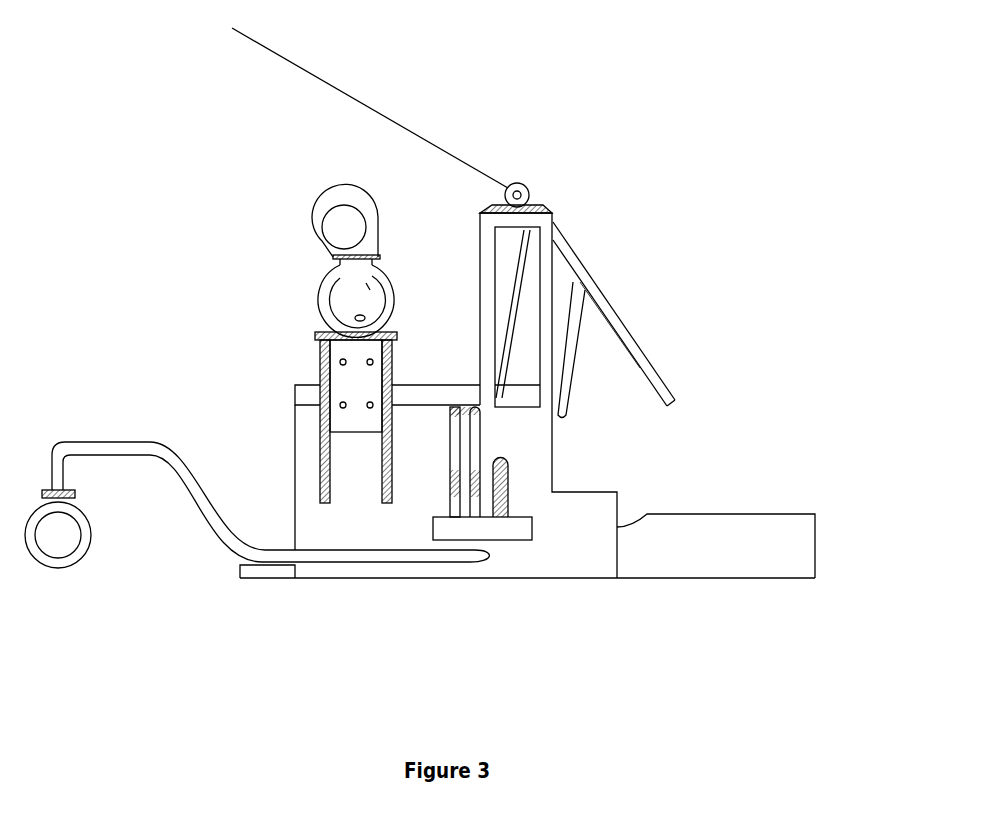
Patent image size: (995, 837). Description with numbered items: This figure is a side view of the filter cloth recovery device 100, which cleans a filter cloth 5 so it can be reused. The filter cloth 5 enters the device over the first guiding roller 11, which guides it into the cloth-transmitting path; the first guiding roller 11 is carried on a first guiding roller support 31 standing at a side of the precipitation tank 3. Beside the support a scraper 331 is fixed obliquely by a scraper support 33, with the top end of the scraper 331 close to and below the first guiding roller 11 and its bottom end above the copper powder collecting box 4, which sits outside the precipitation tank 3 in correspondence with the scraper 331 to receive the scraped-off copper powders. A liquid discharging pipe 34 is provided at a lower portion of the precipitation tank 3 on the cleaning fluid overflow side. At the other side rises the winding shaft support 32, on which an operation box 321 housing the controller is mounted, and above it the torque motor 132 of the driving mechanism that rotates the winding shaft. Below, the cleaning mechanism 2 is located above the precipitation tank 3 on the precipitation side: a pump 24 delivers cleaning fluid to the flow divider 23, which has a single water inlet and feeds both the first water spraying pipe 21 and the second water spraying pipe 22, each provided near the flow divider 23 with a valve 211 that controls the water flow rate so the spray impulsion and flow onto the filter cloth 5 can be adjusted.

The filter cloth recovery device 100 is at (655, 83).
The filter cloth 5 is at (318, 75).
The first guiding roller 11 is at (529, 195).
The first guiding roller support 31 is at (542, 249).
The scraper 331 is at (618, 320).
The scraper support 33 is at (560, 386).
The precipitation tank 3 is at (560, 503).
The copper powder collecting box 4 is at (745, 543).
The liquid discharging pipe 34 is at (257, 578).
The winding shaft support 32 is at (320, 412).
The operation box 321 is at (355, 372).
The torque motor 132 is at (355, 296).
The pump 24 is at (58, 535).
The flow divider 23 is at (522, 528).
The second water spraying pipe 22 is at (472, 465).
The valve 211 is at (455, 478).
The first water spraying pipe 21 is at (505, 483).
The cleaning mechanism 2 is at (543, 655).